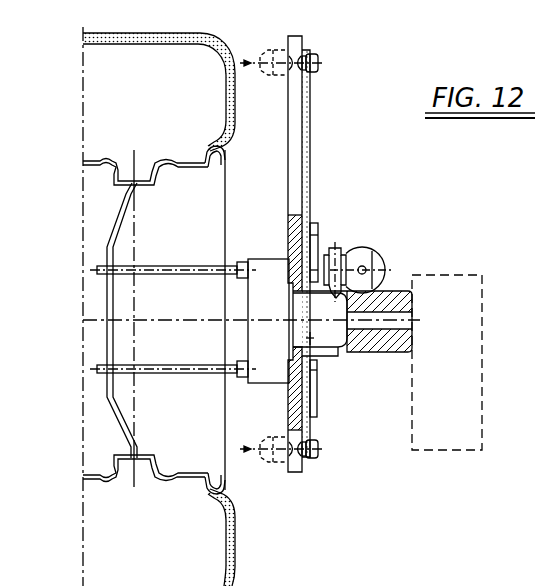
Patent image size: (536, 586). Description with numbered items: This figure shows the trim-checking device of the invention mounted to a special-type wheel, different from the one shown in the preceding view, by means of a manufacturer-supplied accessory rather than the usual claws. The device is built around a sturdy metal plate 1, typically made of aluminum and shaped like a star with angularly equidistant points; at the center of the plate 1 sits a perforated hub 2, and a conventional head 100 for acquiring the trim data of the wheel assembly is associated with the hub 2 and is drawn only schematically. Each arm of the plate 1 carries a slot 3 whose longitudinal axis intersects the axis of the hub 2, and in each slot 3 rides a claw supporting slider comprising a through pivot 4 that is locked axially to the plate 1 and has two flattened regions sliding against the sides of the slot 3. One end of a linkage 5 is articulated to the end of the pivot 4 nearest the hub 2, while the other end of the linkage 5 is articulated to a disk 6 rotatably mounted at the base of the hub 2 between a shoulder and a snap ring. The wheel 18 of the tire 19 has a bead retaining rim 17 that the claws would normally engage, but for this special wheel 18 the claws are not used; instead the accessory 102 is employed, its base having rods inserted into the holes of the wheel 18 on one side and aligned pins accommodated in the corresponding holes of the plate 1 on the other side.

The metal plate 1 is at (286, 234).
The perforated hub 2 is at (394, 350).
The slot 3 is at (302, 196).
The through pivot 4 is at (297, 68).
The linkage 5 is at (308, 134).
The disk 6 is at (318, 393).
The bead retaining rim 17 is at (223, 150).
The wheel 18 is at (224, 476).
The tire 19 is at (160, 117).
The head for acquiring the trim data 100 is at (448, 275).
The accessory 102 is at (180, 378).